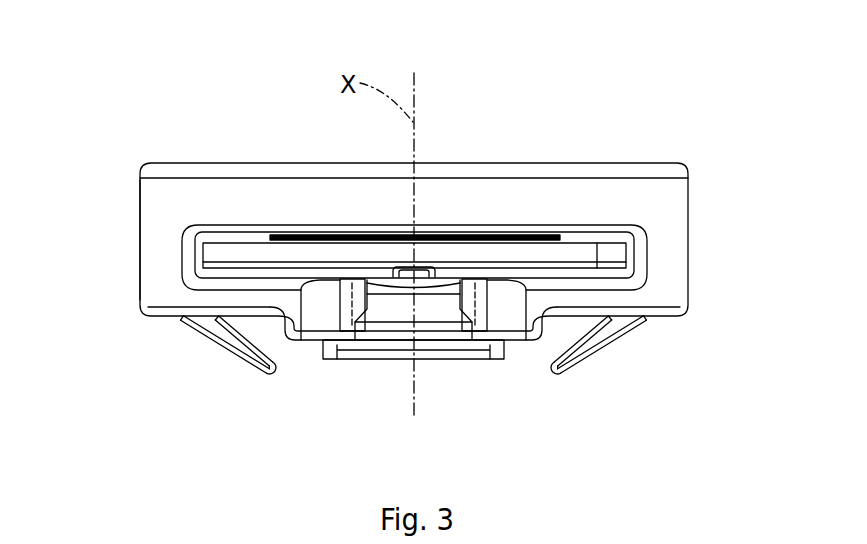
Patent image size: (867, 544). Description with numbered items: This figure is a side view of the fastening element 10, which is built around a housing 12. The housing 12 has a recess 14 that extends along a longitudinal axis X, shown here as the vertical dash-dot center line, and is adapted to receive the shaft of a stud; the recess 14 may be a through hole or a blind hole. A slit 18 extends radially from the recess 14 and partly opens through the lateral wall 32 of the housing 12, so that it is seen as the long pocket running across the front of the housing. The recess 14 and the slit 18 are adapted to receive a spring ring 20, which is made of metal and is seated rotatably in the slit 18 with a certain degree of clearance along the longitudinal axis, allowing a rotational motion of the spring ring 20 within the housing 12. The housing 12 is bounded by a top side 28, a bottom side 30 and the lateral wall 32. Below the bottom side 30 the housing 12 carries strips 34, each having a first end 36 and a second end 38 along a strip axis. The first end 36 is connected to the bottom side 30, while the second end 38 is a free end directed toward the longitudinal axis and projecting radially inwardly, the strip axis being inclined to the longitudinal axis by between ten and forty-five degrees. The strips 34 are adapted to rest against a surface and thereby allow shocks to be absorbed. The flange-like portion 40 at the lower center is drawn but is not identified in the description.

The fastening element 10 is at (738, 147).
The housing 12 is at (690, 227).
The recess 14 is at (445, 350).
The slit 18 is at (613, 258).
The spring ring 20 is at (517, 252).
The top side 28 is at (177, 163).
The bottom side 30 is at (160, 320).
The lateral wall 32 is at (150, 238).
The strips 34 is at (222, 350).
The first end 36 is at (177, 327).
The second end 38 is at (273, 372).
The base plate 40 is at (380, 353).